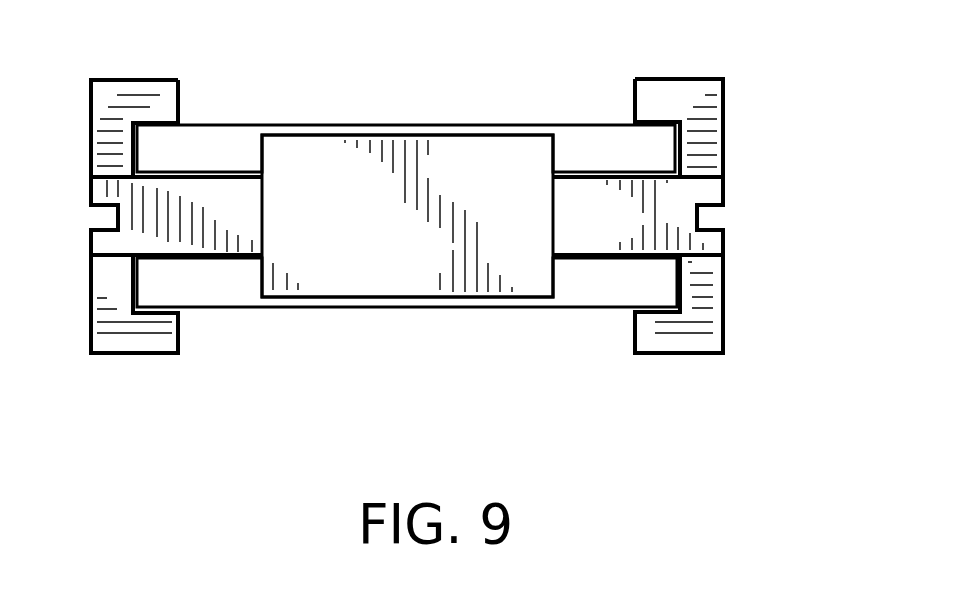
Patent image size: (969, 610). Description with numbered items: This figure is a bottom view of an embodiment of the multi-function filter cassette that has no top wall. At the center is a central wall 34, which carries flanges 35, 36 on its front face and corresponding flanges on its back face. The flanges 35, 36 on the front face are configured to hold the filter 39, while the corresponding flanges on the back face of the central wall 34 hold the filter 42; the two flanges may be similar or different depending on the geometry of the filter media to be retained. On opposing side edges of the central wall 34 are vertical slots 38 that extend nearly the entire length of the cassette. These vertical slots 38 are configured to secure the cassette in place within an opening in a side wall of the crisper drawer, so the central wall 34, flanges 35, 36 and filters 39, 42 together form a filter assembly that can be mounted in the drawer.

The central wall 34 is at (134, 238).
The flange 35 is at (657, 93).
The flange 36 is at (468, 148).
The vertical slot 38 is at (708, 217).
The filter 39 is at (228, 142).
The filter 42 is at (223, 283).